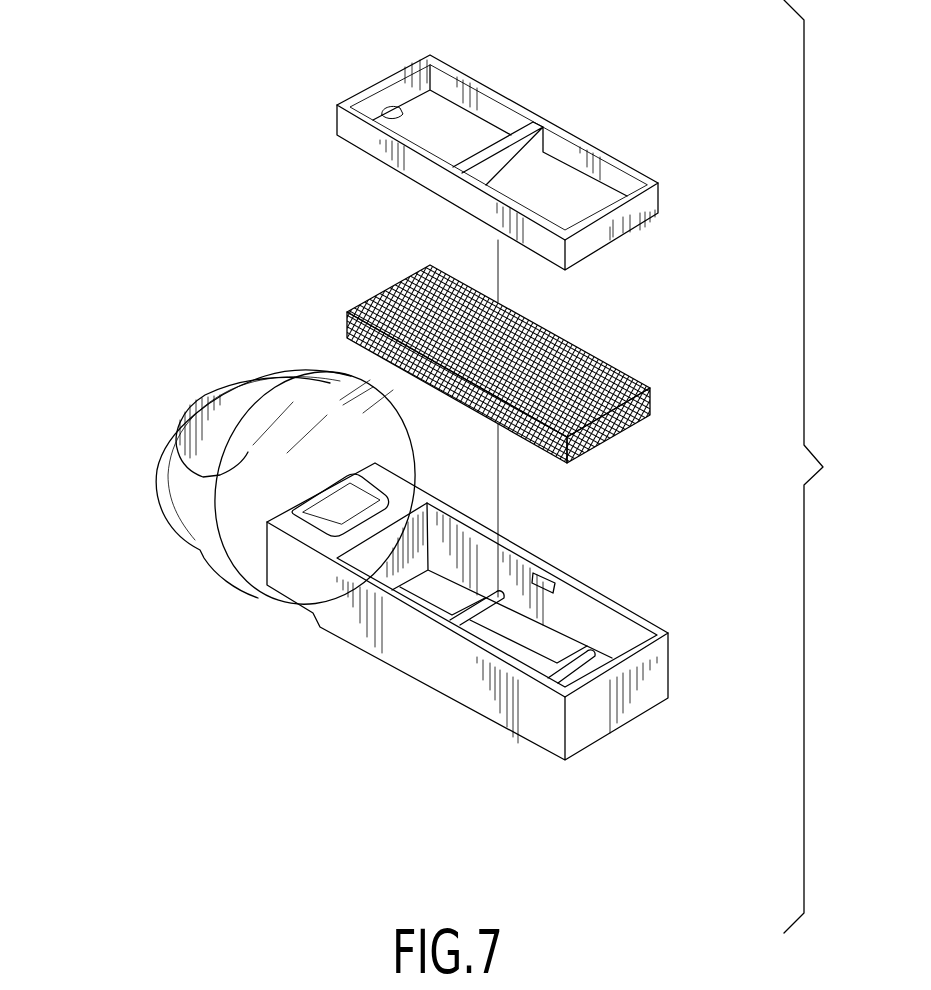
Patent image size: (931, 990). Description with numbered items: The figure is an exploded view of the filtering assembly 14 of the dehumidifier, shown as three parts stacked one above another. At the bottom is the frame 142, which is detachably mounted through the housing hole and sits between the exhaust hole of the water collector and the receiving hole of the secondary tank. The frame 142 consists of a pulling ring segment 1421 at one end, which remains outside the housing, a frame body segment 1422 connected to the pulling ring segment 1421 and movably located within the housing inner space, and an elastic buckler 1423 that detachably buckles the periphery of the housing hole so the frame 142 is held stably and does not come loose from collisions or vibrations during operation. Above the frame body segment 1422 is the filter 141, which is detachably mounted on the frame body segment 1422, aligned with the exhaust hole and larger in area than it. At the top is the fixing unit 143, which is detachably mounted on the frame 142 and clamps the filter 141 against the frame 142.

The filtering assembly 14 is at (138, 221).
The filter 141 is at (625, 387).
The frame 142 is at (627, 627).
The fixing unit 143 is at (647, 208).
The pulling ring segment 1421 is at (182, 508).
The frame body segment 1422 is at (537, 717).
The elastic buckler 1423 is at (373, 505).